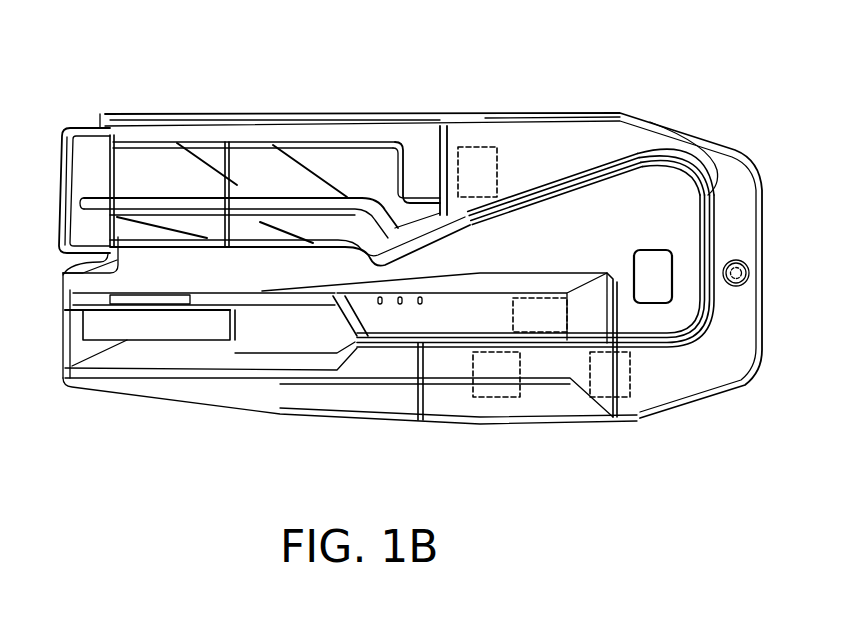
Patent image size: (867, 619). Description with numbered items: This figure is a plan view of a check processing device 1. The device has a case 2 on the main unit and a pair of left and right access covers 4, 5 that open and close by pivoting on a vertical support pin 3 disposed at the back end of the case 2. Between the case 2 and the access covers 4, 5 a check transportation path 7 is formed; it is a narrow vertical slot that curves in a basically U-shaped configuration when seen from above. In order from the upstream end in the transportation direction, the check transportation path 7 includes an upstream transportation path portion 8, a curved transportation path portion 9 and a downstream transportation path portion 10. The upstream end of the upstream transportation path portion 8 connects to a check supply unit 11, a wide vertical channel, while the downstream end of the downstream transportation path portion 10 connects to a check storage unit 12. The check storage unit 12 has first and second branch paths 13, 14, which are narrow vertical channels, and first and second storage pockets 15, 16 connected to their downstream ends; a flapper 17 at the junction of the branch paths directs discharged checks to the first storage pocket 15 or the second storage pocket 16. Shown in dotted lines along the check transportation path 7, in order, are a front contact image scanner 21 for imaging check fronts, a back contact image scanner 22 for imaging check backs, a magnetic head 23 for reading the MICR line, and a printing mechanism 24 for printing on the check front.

The check processing device 1 is at (755, 130).
The case 2 is at (319, 420).
The vertical support pin 3 is at (733, 284).
The access cover 4 is at (443, 403).
The access cover 5 is at (524, 136).
The check transportation path 7 is at (535, 179).
The upstream transportation path portion 8 is at (612, 340).
The curved transportation path portion 9 is at (697, 152).
The downstream transportation path portion 10 is at (570, 188).
The check supply unit 11 is at (160, 330).
The check storage unit 12 is at (250, 168).
The first branch path 13 is at (420, 150).
The second branch path 14 is at (393, 247).
The first storage pocket 15 is at (317, 160).
The second storage pocket 16 is at (108, 130).
The flapper 17 is at (450, 210).
The front contact image scanner 21 is at (497, 398).
The back contact image scanner 22 is at (548, 340).
The magnetic head 23 is at (627, 395).
The printing mechanism 24 is at (475, 147).